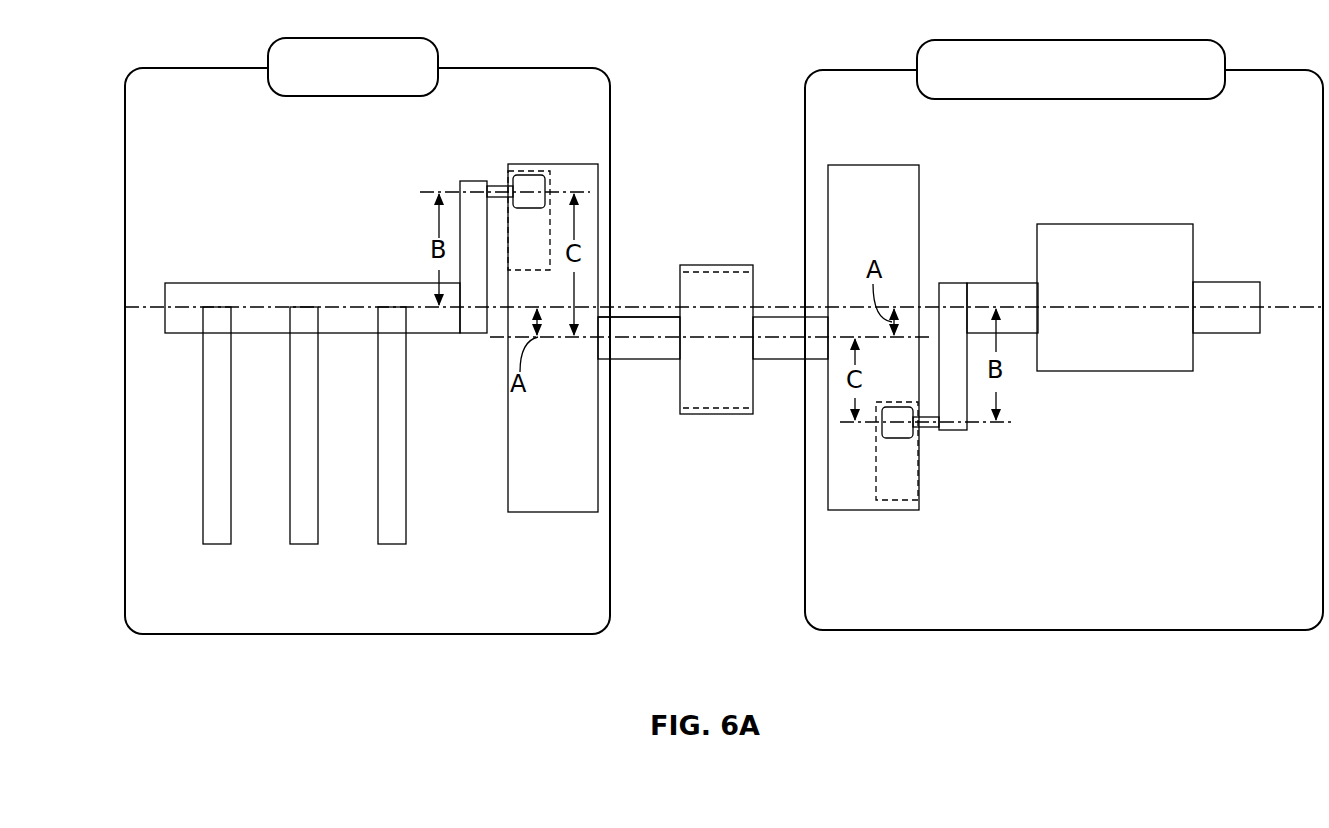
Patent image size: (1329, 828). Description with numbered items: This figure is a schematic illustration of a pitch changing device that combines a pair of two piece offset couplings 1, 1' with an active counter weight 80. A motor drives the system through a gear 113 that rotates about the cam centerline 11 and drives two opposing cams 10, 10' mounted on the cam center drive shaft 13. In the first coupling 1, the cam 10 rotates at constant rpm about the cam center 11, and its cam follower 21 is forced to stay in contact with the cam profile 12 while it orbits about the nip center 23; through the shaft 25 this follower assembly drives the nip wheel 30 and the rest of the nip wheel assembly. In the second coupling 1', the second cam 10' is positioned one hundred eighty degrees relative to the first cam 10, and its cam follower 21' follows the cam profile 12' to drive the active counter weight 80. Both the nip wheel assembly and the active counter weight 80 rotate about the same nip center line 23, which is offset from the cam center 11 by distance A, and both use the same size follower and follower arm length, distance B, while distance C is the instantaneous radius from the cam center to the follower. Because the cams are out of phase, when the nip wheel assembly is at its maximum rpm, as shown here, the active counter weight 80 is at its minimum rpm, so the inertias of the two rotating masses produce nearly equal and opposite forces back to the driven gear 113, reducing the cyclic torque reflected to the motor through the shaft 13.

The offset coupling 1 is at (367, 336).
The second offset coupling 1' is at (1064, 335).
The cam 10 is at (553, 376).
The second cam 10' is at (873, 378).
The cam center 11 is at (633, 348).
The cam profile 12 is at (558, 191).
The second cam profile 12' is at (931, 456).
The shaft 13 is at (652, 316).
The cam follower 21 is at (501, 160).
The second cam follower 21' is at (934, 444).
The nip center 23 is at (347, 305).
The shaft 25 is at (399, 281).
The nip wheel 30 is at (218, 548).
The active counter weight 80 is at (1092, 223).
The gear 113 is at (710, 263).